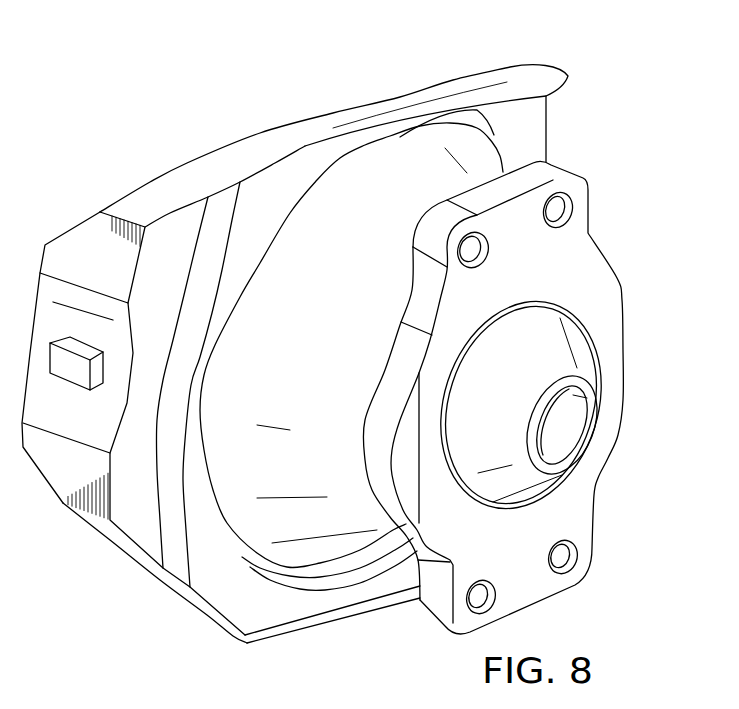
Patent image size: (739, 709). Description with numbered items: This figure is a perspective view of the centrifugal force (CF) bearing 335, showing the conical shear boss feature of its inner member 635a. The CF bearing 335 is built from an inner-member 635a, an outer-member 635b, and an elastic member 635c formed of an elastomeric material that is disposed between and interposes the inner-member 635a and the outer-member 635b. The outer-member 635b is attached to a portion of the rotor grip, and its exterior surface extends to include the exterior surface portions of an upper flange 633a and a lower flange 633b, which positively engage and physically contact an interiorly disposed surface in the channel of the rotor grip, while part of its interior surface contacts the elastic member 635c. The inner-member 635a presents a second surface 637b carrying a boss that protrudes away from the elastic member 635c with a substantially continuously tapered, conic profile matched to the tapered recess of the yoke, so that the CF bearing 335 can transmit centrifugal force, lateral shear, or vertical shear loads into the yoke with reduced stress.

The centrifugal force (CF) bearing 335 is at (640, 101).
The upper flange 633a is at (540, 77).
The lower flange 633b is at (290, 627).
The inner-member 635a is at (573, 253).
The outer-member 635b is at (183, 163).
The elastic member 635c is at (355, 200).
The second surface 637b is at (583, 357).